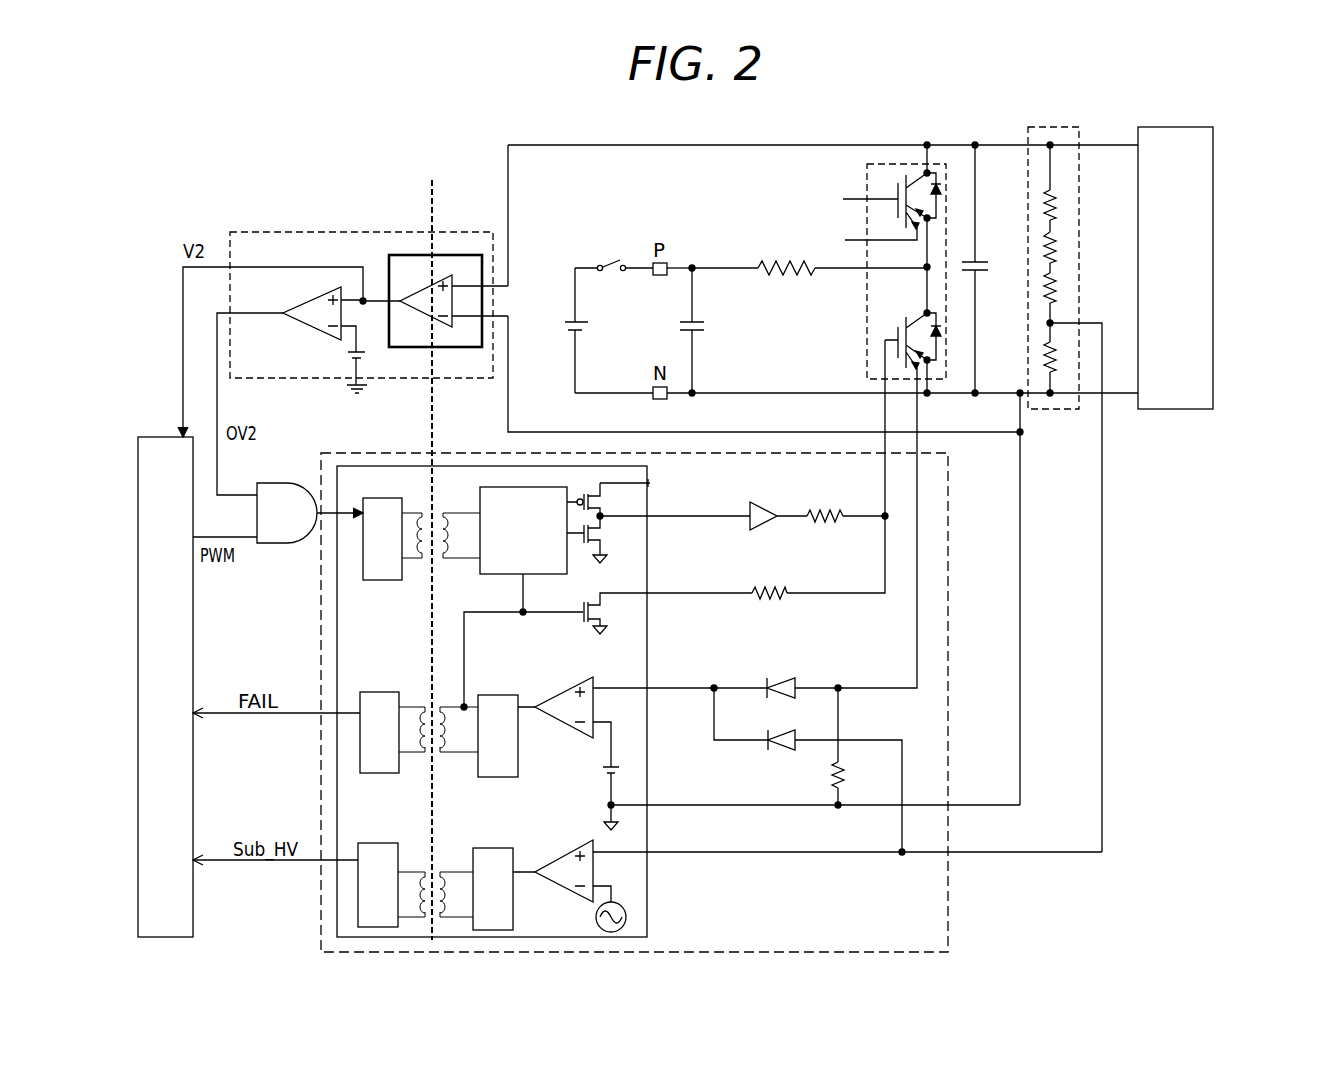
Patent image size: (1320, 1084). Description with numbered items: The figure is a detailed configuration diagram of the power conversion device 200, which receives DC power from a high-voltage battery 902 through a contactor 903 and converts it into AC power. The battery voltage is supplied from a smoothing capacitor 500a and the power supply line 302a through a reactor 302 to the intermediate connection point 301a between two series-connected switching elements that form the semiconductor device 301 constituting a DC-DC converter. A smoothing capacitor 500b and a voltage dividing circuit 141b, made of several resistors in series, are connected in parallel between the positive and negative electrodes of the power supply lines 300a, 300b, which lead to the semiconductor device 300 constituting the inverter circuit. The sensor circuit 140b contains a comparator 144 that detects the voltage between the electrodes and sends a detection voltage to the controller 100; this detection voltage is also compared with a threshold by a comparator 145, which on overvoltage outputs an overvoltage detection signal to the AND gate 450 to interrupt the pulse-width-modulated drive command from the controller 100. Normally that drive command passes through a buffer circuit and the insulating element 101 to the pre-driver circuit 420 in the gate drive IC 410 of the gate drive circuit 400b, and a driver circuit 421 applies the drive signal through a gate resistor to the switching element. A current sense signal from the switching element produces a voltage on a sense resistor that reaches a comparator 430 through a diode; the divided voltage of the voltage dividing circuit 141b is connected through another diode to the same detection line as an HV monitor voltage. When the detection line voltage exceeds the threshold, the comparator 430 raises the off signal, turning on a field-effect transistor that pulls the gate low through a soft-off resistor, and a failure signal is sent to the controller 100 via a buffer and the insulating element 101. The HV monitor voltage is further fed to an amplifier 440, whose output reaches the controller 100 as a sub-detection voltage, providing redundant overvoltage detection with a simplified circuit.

The controller 100 is at (197, 668).
The insulating element 101 is at (438, 424).
The sensor circuit 140b is at (250, 228).
The voltage dividing circuit 141b is at (1047, 412).
The comparator 144 is at (392, 255).
The comparator 145 is at (303, 305).
The power conversion device 200 is at (1114, 120).
The semiconductor device 300 is at (1213, 232).
The power supply line 300a is at (1005, 142).
The power supply line 300b is at (813, 391).
The semiconductor device 301 is at (875, 164).
The connection point of switching elements 301a is at (853, 271).
The reactor 302 is at (782, 257).
The power supply line 302a is at (720, 268).
The gate drive IC 410 is at (719, 638).
The pre-driver circuit 420 is at (480, 500).
The driver circuit 421 is at (608, 532).
The comparator 430 is at (572, 683).
The amplifier 440 is at (568, 848).
The AND gate 450 is at (285, 546).
The gate drive circuit 400b is at (950, 925).
The smoothing capacitor 500a is at (708, 328).
The smoothing capacitor 500b is at (979, 256).
The high-voltage battery 902 is at (588, 331).
The contactor 903 is at (615, 258).